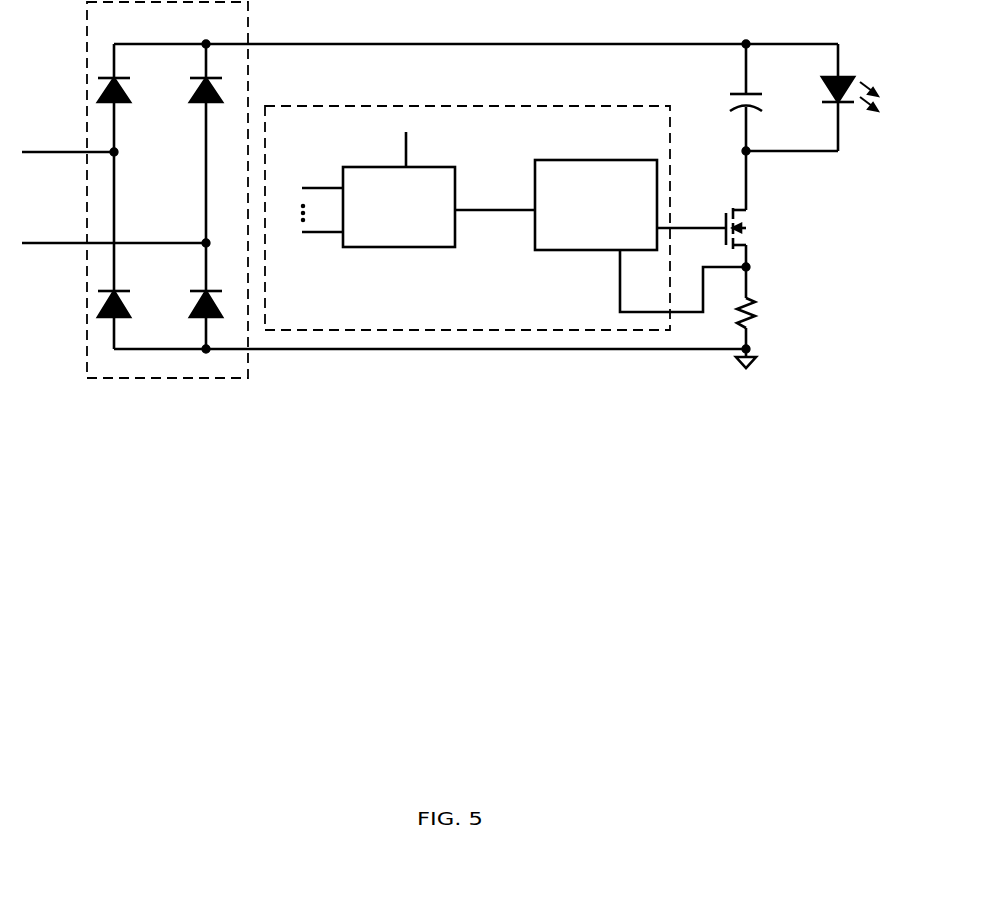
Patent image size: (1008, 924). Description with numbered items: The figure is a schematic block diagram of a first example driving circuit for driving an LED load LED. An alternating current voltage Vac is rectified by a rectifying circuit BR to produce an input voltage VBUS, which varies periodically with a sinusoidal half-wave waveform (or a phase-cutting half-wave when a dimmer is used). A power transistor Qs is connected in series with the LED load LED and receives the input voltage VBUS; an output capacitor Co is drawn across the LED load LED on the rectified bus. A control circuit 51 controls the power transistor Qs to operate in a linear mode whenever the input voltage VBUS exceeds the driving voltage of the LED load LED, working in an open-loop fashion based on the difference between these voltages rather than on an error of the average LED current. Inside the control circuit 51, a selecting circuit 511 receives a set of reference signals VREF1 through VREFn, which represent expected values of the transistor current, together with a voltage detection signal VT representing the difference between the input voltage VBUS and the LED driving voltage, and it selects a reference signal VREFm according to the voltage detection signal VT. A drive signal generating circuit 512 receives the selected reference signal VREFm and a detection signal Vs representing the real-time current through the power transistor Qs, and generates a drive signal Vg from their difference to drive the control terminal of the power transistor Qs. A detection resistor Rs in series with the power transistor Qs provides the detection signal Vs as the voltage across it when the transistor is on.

The rectifying circuit BR is at (167, 190).
The alternating current voltage Vac is at (107, 197).
The input voltage VBUS is at (522, 184).
The control circuit 51 is at (505, 218).
The selecting circuit 511 is at (399, 207).
The drive signal generating circuit 512 is at (596, 205).
The voltage detection signal VT is at (404, 138).
The reference signal VREF1 is at (308, 176).
The reference signal VREFn is at (307, 229).
The selected reference signal VREFm is at (495, 194).
The drive signal Vg is at (691, 214).
The detection signal Vs is at (669, 281).
The output capacitor Co is at (769, 99).
The LED load LED is at (869, 97).
The power transistor Qs is at (753, 224).
The detection resistor Rs is at (759, 333).